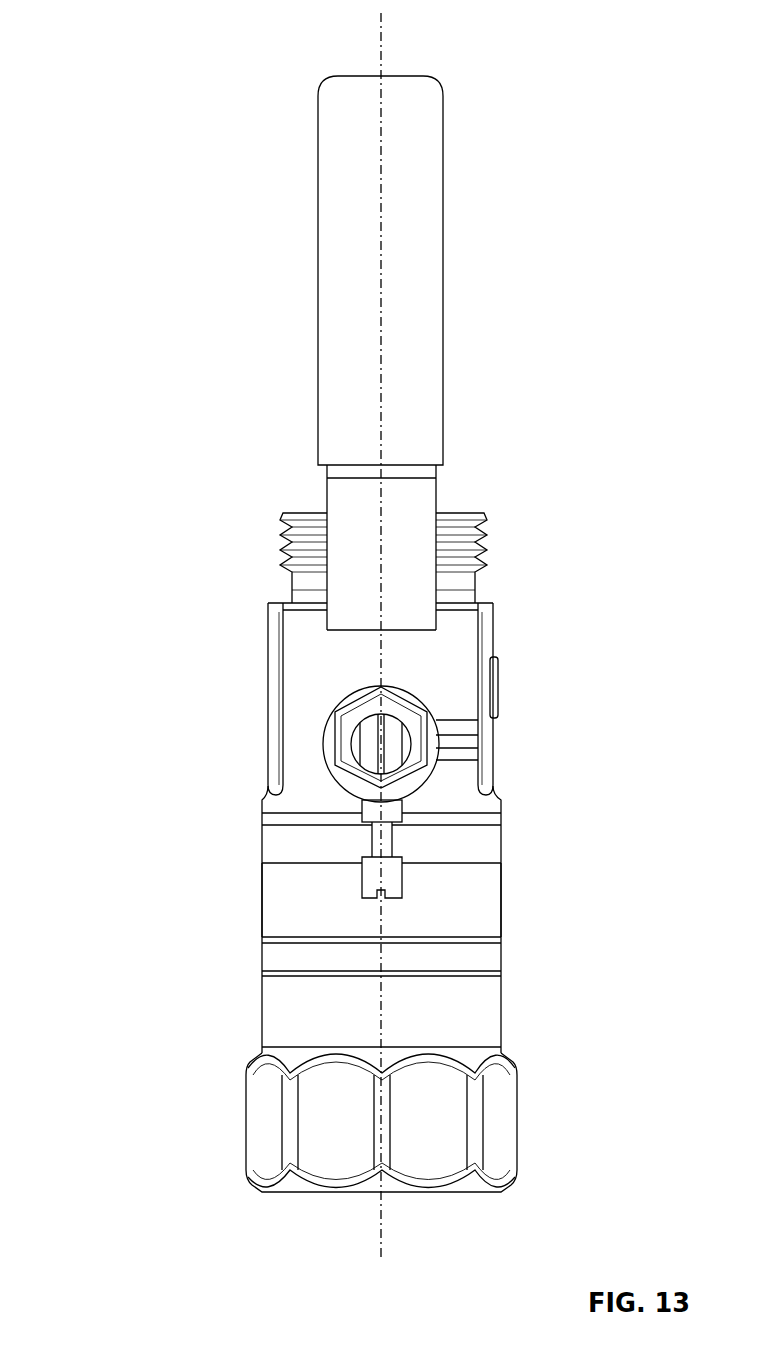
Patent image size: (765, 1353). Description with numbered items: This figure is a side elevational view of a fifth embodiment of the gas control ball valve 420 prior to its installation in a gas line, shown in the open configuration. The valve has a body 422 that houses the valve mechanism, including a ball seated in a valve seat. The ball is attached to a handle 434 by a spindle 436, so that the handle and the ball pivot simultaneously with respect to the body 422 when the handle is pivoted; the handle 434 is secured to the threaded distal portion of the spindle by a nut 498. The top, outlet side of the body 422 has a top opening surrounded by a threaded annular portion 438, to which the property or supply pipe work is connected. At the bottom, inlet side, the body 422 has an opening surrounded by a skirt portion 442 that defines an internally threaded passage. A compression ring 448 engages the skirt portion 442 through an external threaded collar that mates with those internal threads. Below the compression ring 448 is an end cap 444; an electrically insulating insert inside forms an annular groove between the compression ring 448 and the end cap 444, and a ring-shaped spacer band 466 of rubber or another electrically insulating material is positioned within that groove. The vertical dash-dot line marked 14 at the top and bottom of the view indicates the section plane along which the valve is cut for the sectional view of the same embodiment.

The section line 14- 14 is at (381, 13).
The ball valve 420 is at (155, 80).
The handle 434 is at (437, 492).
The threaded annular portion 438 is at (485, 545).
The body 422 is at (220, 742).
The spindle 436 is at (365, 707).
The nut 498 is at (403, 703).
The skirt portion 442 is at (262, 850).
The compression ring 448 is at (502, 897).
The spacer band 466 is at (502, 956).
The end cap 444 is at (517, 1095).